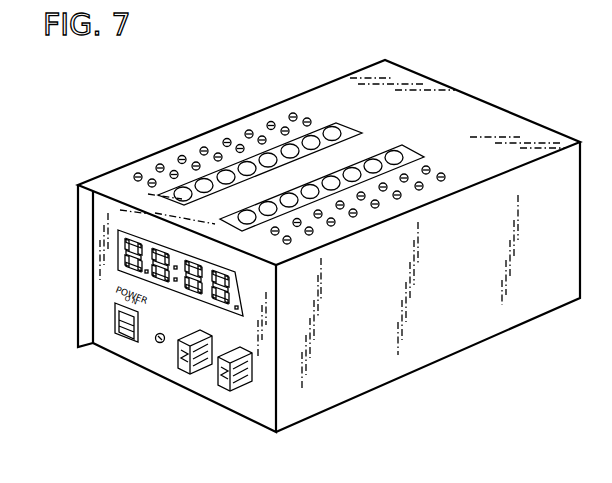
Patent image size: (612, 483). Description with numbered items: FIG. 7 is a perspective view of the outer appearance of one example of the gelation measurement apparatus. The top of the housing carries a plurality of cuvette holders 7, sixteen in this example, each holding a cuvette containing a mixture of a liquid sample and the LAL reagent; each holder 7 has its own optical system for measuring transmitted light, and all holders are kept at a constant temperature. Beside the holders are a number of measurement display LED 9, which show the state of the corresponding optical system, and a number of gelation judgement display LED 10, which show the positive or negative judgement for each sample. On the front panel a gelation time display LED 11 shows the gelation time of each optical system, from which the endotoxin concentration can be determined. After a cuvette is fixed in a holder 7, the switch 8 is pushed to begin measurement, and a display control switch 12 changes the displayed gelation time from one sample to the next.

The cuvette holder 7 is at (331, 126).
The switch 8 is at (232, 388).
The measurement display LED 9 is at (134, 176).
The gelation judgement display LED 10 is at (152, 179).
The gelation time display LED 11 is at (122, 240).
The display control switch 12 is at (196, 369).